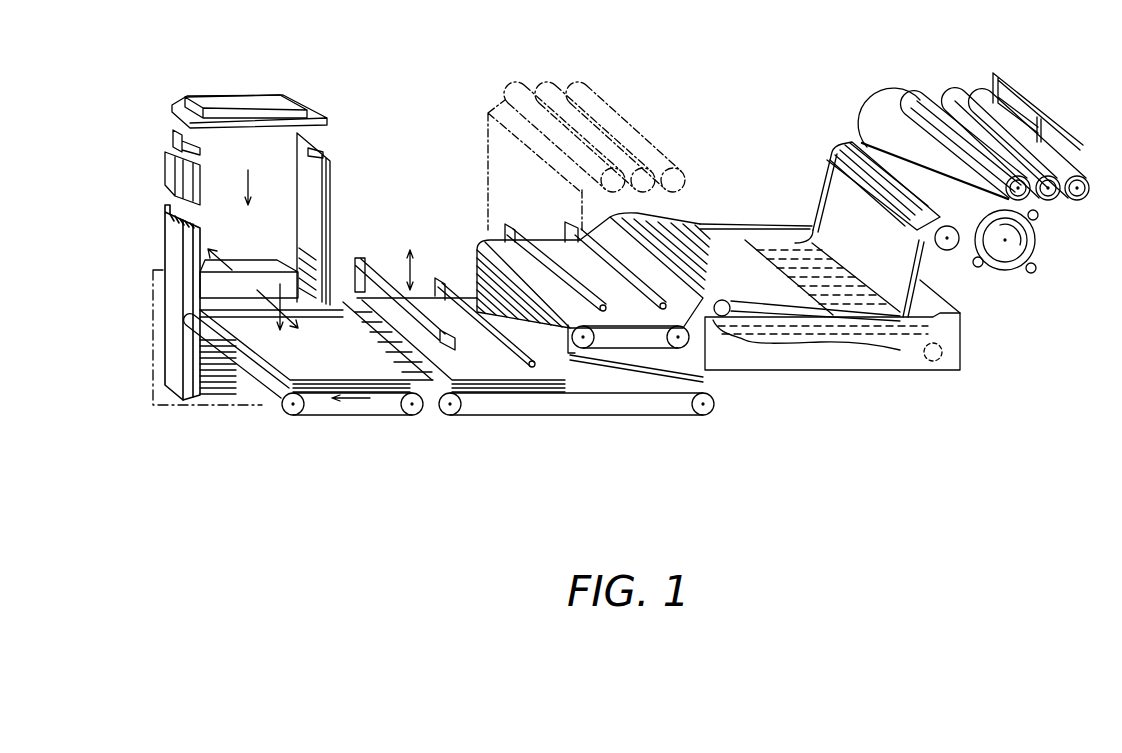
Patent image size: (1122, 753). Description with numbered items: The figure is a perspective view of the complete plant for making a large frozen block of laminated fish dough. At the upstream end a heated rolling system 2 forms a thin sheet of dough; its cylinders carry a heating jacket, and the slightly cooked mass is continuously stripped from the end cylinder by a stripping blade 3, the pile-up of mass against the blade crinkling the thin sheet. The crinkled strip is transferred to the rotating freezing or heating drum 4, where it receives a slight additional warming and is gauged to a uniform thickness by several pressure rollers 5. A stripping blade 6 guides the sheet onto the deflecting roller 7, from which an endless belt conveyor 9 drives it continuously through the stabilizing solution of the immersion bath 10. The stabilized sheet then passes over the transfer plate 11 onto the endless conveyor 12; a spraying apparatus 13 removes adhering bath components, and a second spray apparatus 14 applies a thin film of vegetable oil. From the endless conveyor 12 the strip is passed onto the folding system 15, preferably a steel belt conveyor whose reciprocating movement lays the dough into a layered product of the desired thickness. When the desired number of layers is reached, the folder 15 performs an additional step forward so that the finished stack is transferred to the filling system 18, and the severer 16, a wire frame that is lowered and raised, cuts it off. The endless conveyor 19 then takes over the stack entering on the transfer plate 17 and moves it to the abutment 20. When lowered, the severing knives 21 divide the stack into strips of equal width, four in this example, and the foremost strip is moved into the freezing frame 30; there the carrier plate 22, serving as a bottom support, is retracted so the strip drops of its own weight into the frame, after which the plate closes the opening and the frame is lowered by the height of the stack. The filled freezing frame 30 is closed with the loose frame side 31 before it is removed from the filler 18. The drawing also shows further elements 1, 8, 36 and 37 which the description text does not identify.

The squeeze roller frame 1 is at (1022, 90).
The heated rolling system 2 is at (950, 97).
The stripping blade 3 is at (920, 100).
The freezing or heating drum 4 is at (888, 122).
The pressure rollers 5 is at (1036, 272).
The stripping blade 6 is at (858, 127).
The deflecting roller 7 is at (943, 251).
The chute 8 is at (810, 192).
The endless belt conveyor 9 is at (903, 345).
The immersion bath 10 is at (817, 362).
The transfer plate 11 is at (713, 318).
The endless conveyor 12 is at (613, 366).
The spraying apparatus 13 is at (577, 228).
The second spray apparatus 14 is at (440, 283).
The folding system 15 is at (525, 418).
The severer 16 is at (362, 260).
The transfer plate 17 is at (430, 388).
The filling system 18 is at (382, 374).
The endless conveyor 19 is at (333, 408).
The abutment 20 is at (277, 380).
The severing knives 21 is at (228, 314).
The carrier plate 22 is at (160, 334).
The freezing frame 30 is at (307, 207).
The loose frame side 31 is at (252, 115).
The support bar 36 is at (647, 361).
The spray hood 37 is at (507, 226).